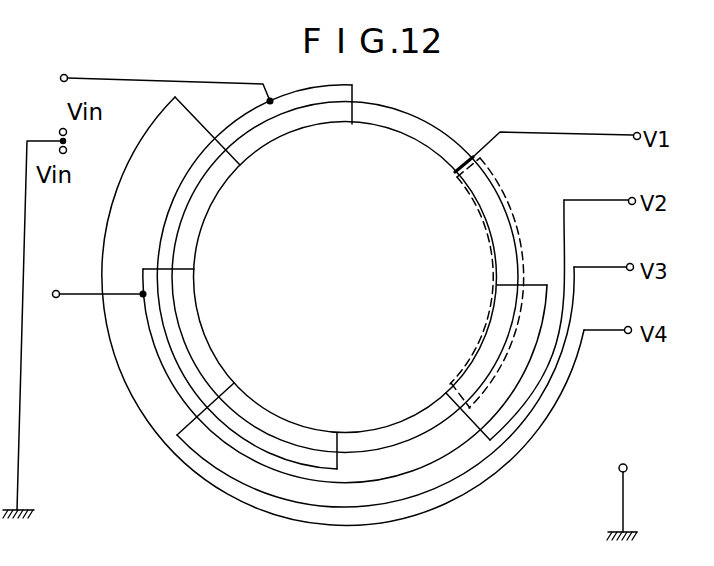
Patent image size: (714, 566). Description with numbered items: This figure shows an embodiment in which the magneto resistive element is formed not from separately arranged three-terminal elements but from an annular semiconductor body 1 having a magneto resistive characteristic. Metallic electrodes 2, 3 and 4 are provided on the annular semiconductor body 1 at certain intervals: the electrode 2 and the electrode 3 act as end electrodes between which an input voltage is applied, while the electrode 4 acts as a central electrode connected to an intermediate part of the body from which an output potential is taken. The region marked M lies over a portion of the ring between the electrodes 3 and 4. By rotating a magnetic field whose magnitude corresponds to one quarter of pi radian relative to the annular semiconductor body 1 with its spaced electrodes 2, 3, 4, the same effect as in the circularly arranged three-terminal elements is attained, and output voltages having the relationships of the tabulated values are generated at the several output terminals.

The semiconductor body 1 is at (345, 269).
The metallic electrode 2 is at (351, 126).
The metallic electrode 3 is at (494, 286).
The central electrode 4 is at (532, 171).
The movable wiper contact M is at (497, 283).